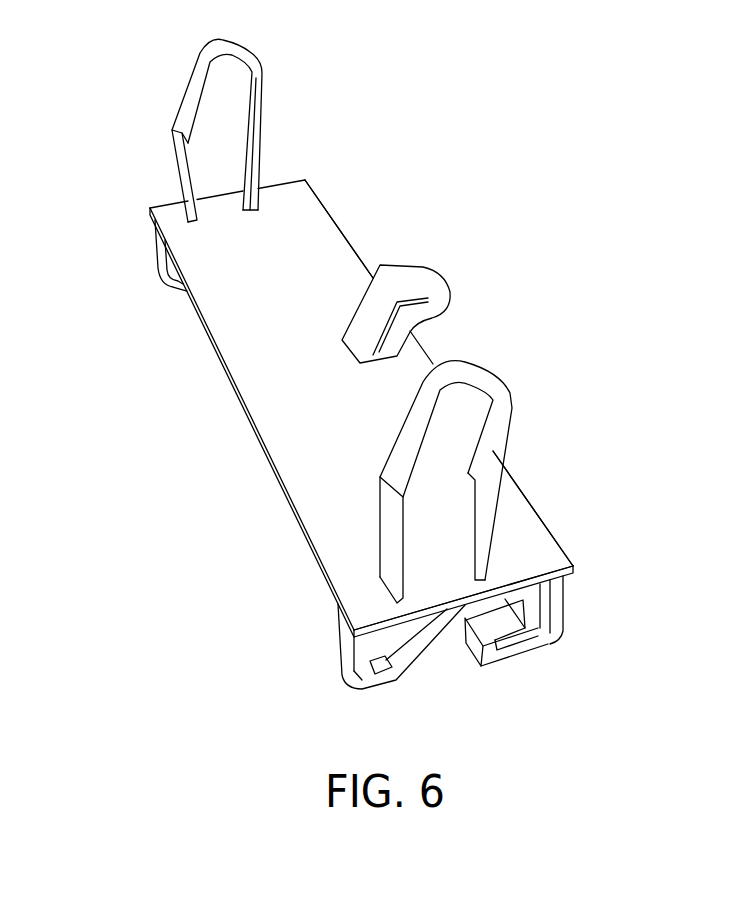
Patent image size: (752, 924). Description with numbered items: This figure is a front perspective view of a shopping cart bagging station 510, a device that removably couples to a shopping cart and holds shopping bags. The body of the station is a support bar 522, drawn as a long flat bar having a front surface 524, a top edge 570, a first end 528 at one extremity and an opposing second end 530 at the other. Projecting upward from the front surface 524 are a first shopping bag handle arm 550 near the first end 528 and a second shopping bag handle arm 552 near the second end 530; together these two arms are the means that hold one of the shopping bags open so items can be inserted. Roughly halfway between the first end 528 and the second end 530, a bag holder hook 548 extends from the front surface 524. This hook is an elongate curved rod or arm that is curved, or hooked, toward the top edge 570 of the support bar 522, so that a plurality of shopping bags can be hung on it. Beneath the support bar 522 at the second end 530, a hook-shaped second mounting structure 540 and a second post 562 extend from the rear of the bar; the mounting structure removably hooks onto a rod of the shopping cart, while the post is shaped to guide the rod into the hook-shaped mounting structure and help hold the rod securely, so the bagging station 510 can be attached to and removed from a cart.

The shopping cart bagging station 510 is at (445, 137).
The support bar 522 is at (313, 237).
The front surface 524 is at (330, 402).
The first end 528 is at (130, 201).
The second end 530 is at (612, 564).
The second mounting structure 540 is at (541, 638).
The bag holder hook 548 is at (408, 288).
The first shopping bag handle arm 550 is at (220, 97).
The second shopping bag handle arm 552 is at (478, 415).
The second post 562 is at (382, 668).
The top edge 570 is at (537, 503).